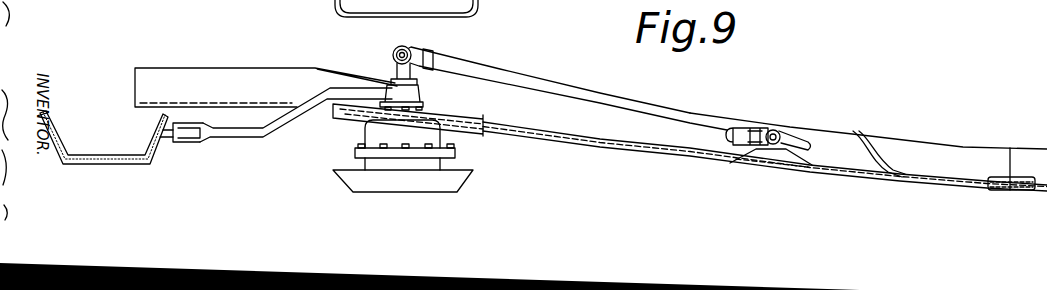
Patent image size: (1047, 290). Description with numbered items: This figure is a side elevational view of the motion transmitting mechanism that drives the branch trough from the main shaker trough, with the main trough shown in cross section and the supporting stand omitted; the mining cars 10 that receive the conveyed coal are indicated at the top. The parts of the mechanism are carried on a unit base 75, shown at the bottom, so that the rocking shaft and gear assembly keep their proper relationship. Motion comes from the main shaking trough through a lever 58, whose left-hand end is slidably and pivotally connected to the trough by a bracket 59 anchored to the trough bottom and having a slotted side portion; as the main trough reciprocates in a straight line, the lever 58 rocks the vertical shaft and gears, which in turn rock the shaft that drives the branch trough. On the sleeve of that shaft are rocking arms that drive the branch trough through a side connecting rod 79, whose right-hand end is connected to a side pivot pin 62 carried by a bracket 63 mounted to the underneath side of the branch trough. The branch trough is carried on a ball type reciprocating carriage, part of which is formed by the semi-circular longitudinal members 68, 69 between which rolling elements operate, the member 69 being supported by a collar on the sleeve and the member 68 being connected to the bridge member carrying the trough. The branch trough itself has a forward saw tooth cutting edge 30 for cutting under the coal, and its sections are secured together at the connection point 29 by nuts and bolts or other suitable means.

The mining cars 10 is at (407, 0).
The connection point 29 is at (987, 178).
The saw tooth cutting edge 30 is at (910, 180).
The lever 58 is at (277, 121).
The bracket 59 is at (172, 143).
The side pivot pin 62 is at (780, 130).
The bracket 63 is at (779, 167).
The semi-circular longitudinal member 68 is at (484, 120).
The semi-circular longitudinal member 69 is at (485, 140).
The unit base 75 is at (472, 178).
The side connecting rod 79 is at (551, 90).